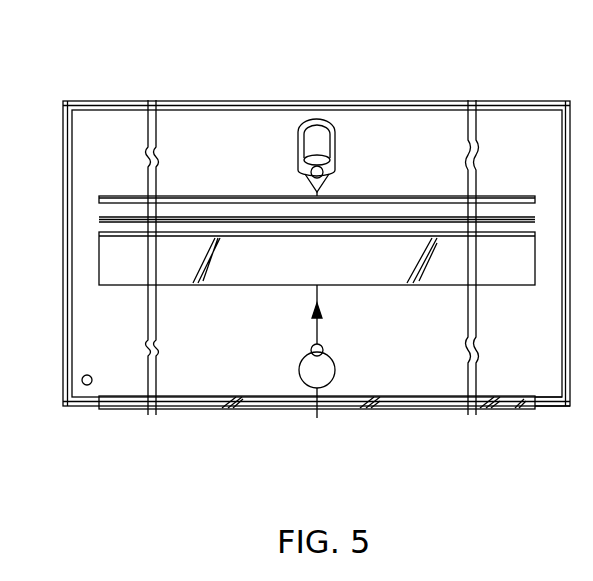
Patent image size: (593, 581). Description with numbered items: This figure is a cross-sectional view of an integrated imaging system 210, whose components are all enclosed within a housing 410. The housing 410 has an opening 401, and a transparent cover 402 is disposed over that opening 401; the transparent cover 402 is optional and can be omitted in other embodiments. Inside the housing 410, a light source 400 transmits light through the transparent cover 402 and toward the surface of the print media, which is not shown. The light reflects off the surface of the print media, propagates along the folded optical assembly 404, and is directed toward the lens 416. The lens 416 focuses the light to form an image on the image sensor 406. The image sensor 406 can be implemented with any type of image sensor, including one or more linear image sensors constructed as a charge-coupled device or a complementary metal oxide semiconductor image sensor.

The integrated imaging system 210 is at (126, 63).
The housing 410 is at (62, 195).
The lens 416 is at (218, 196).
The folded optical assembly 404 is at (218, 286).
The image sensor 406 is at (336, 141).
The light source 400 is at (300, 362).
The transparent cover 402 is at (412, 411).
The opening 401 is at (532, 411).